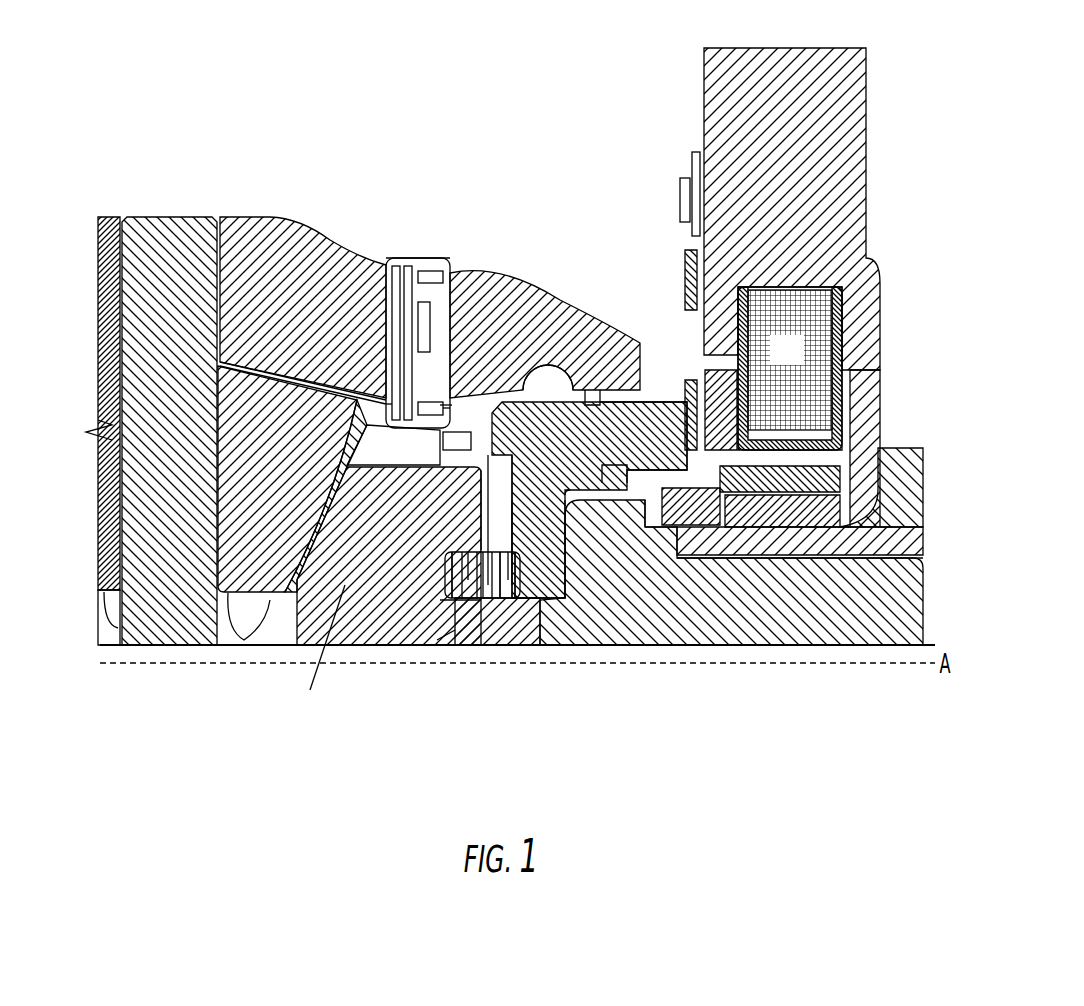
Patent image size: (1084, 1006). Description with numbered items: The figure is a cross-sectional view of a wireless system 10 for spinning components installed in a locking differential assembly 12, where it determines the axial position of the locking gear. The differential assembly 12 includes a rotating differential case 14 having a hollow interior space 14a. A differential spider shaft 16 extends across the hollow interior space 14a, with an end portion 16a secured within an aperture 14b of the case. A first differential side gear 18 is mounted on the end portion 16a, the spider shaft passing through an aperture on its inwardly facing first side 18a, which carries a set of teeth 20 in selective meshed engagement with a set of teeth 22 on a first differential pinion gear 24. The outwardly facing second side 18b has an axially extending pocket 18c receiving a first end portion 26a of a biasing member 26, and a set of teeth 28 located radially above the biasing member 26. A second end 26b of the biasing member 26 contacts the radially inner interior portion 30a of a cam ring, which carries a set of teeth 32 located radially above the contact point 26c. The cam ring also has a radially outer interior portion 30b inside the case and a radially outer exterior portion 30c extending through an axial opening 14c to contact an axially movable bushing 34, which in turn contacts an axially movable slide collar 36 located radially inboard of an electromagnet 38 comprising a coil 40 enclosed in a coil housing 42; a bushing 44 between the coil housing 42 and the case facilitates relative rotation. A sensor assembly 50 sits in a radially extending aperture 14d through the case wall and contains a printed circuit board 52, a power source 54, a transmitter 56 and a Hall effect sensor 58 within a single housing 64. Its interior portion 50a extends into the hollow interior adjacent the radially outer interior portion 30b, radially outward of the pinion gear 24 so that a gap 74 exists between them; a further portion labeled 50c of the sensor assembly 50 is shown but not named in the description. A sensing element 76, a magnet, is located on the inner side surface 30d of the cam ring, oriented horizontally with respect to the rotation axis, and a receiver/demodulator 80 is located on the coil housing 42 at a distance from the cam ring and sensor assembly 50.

The wireless system 10 is at (432, 118).
The locking differential assembly 12 is at (122, 672).
The differential case 14 is at (232, 200).
The hollow interior space 14a is at (378, 469).
The aperture 14b is at (652, 545).
The axial opening 14c is at (642, 396).
The aperture 14d is at (392, 257).
The differential spider shaft 16 is at (745, 617).
The end portion 16a is at (490, 645).
The first differential side gear 18 is at (380, 544).
The first side 18a is at (455, 630).
The second side 18b is at (505, 500).
The axially extending pocket 18c is at (440, 604).
The set of teeth 20 is at (345, 500).
The set of teeth 22 is at (290, 600).
The first differential pinion gear 24 is at (248, 501).
The biasing member 26 is at (505, 600).
The first end portion 26a is at (462, 606).
The second end 26b is at (540, 585).
The contact point 26c is at (519, 584).
The set of teeth 28 is at (519, 510).
The radially inner interior portion 30a is at (528, 561).
The radially outer interior portion 30b is at (538, 451).
The radially outer exterior portion 30c is at (630, 447).
The inner side surface 30d is at (560, 362).
The set of teeth 32 is at (612, 548).
The axially movable bushing 34 is at (683, 519).
The axially movable slide collar 36 is at (773, 479).
The electromagnet 38 is at (828, 345).
The coil 40 is at (777, 364).
The coil housing 42 is at (850, 415).
The bushing 44 is at (703, 419).
The sensor assembly 50 is at (454, 262).
The interior portion 50a is at (430, 400).
The sensor portion 50c is at (384, 412).
The printed circuit board 52 is at (410, 265).
The power source 54 is at (397, 289).
The transmitter 56 is at (433, 268).
The sensor 58 is at (458, 403).
The housing 64 is at (446, 407).
The gap 74 is at (357, 397).
The sensing element 76 is at (462, 431).
The receiver/demodulator 80 is at (680, 178).